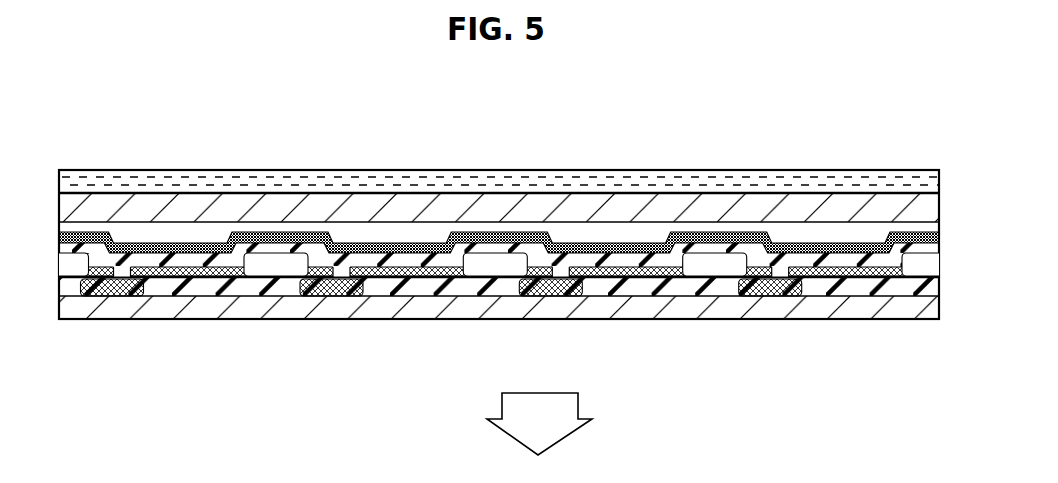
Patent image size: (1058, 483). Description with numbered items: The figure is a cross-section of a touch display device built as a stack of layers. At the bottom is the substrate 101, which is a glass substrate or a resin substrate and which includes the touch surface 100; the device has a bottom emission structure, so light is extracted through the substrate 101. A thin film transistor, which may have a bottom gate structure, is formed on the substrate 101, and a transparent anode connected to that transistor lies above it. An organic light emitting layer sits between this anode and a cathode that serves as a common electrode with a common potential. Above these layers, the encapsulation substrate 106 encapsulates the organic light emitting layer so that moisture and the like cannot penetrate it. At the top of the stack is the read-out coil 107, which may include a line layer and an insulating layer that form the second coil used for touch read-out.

The touch surface 100 is at (669, 333).
The substrate 101 is at (765, 305).
The encapsulation substrate 106 is at (243, 207).
The read-out coil 107 is at (353, 178).